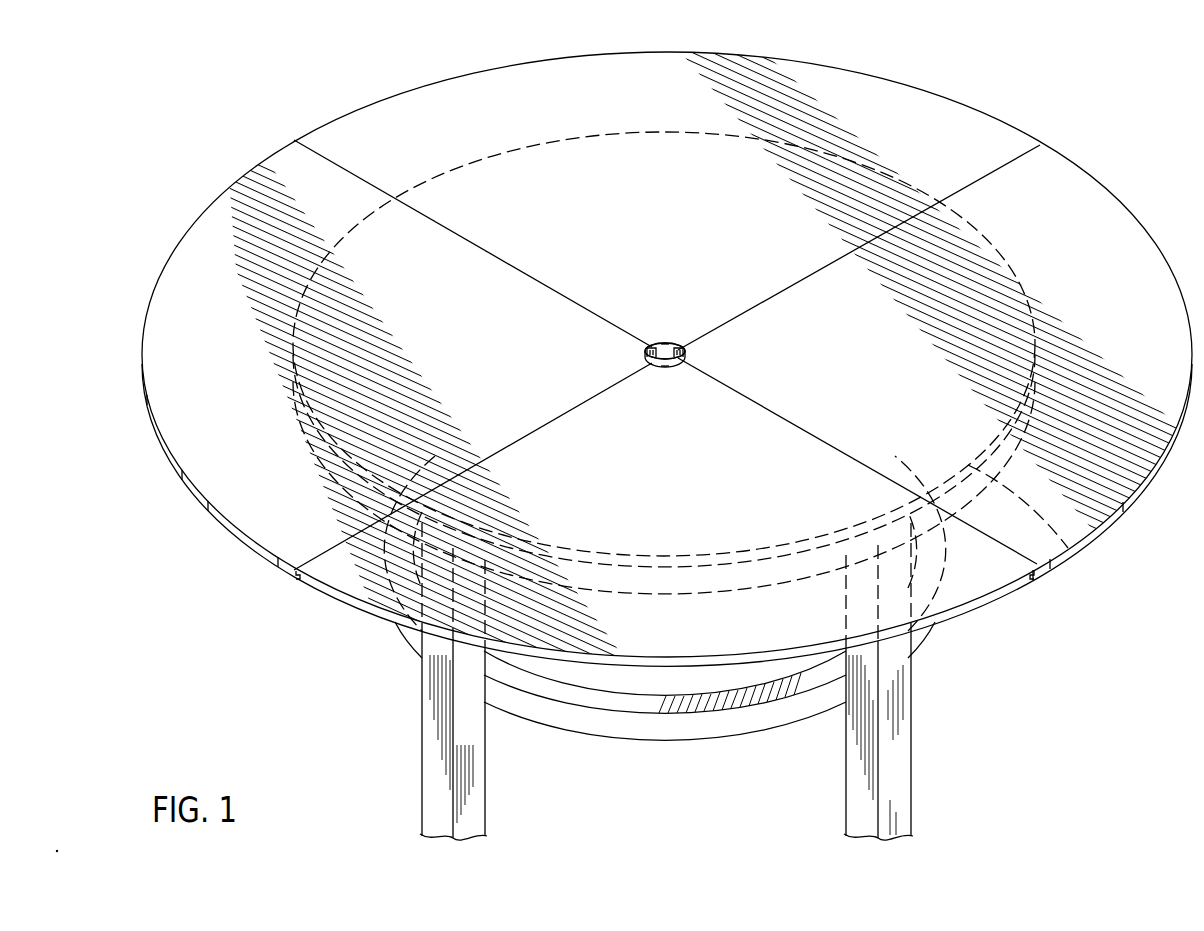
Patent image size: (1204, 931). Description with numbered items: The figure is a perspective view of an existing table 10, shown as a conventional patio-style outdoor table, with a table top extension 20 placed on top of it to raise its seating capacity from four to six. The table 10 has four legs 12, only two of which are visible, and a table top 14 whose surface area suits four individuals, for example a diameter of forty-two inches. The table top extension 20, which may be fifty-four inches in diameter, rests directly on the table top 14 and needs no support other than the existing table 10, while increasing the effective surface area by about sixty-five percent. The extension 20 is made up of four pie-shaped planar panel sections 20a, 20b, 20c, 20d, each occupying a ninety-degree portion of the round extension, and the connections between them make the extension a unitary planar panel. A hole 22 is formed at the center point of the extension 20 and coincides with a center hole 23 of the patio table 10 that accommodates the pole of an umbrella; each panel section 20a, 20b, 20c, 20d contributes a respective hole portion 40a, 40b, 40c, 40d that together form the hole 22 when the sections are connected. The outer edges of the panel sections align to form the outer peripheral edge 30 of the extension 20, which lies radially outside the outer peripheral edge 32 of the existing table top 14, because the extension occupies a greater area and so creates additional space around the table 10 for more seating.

The table 10 is at (918, 725).
The legs 12 is at (482, 808).
The table top 14 is at (978, 226).
The table top extension 20 is at (1028, 128).
The planar panel section 20a is at (868, 129).
The planar panel section 20b is at (1148, 325).
The planar panel section 20c is at (771, 639).
The planar panel section 20d is at (250, 440).
The hole 22 is at (673, 343).
The center hole 23 is at (661, 357).
The outer peripheral edge 30 is at (1097, 532).
The outer peripheral edge 32 is at (1073, 558).
The hole portion 40a is at (663, 344).
The hole portion 40b is at (685, 355).
The hole portion 40c is at (667, 367).
The hole portion 40d is at (645, 355).